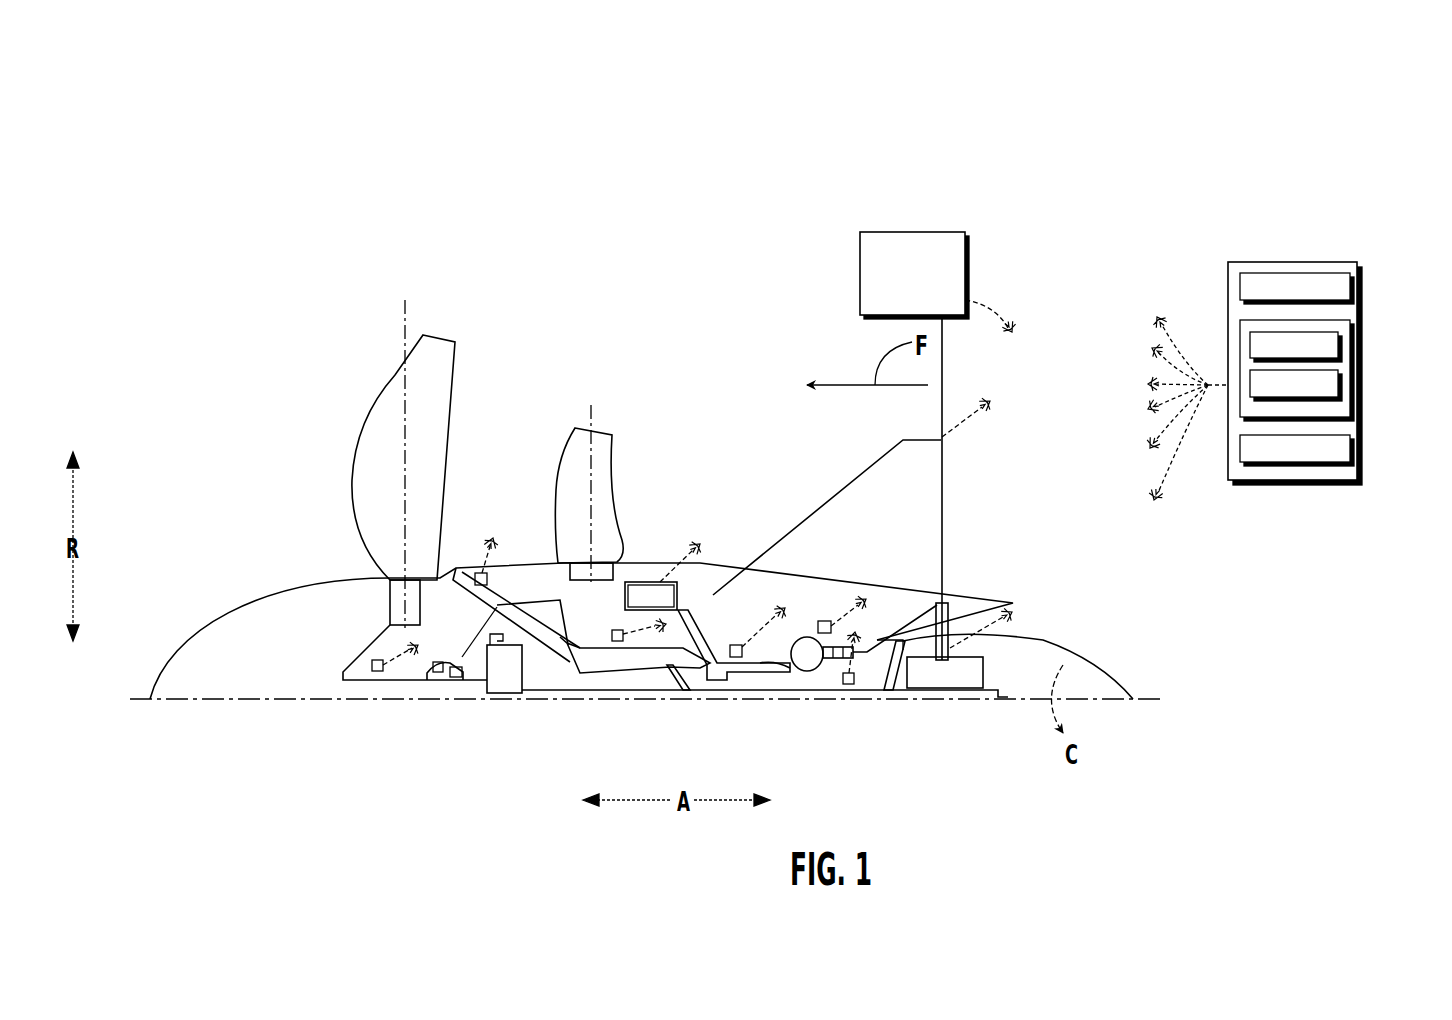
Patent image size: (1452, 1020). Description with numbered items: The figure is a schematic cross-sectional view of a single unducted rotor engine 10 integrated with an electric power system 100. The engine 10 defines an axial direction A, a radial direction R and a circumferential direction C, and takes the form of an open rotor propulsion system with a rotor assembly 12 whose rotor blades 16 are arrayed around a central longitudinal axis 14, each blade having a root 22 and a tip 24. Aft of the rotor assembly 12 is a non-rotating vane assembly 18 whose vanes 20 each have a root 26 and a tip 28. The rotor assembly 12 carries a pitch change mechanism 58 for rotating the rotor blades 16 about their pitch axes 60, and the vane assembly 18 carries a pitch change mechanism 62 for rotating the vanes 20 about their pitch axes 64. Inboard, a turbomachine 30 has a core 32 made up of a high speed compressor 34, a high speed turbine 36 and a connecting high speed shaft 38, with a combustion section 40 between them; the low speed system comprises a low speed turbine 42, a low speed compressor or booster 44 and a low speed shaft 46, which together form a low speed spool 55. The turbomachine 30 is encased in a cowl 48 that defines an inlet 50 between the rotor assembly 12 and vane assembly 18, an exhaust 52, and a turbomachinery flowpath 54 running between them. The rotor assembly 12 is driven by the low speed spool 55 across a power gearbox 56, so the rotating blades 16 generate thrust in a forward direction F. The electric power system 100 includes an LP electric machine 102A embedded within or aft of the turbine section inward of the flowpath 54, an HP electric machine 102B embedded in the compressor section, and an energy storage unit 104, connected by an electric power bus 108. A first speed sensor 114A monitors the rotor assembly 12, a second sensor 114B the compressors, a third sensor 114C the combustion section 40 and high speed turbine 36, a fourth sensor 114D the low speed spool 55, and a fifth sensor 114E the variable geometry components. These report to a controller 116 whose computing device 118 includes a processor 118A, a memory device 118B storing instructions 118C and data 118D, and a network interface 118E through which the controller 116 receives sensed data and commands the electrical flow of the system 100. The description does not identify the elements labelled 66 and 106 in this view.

The electric power system 100 is at (788, 140).
The single unducted rotor engine 10 is at (610, 298).
The rotor assembly 12 is at (300, 490).
The central longitudinal axis 14 is at (343, 705).
The rotor blades 16 is at (352, 455).
The vane assembly 18 is at (701, 354).
The vanes 20 is at (612, 498).
The root 22 is at (377, 572).
The tip 24 is at (448, 340).
The root 26 is at (618, 565).
The tip 28 is at (603, 432).
The turbomachine 30 is at (714, 540).
The core 32 is at (823, 555).
The high speed compressor 34 is at (792, 666).
The high speed turbine 36 is at (838, 658).
The high speed shaft 38 is at (800, 670).
The combustion section 40 is at (818, 668).
The low speed turbine 42 is at (936, 608).
The low speed compressor 44 is at (617, 660).
The low speed shaft 46 is at (733, 690).
The cowl 48 is at (862, 577).
The inlet 50 is at (447, 562).
The exhaust 52 is at (1034, 625).
The turbomachinery flowpath 54 is at (548, 662).
The low speed spool 55 is at (775, 700).
The power gearbox 56 is at (505, 690).
The pitch change mechanism 58 is at (398, 603).
The pitch axes 60 is at (398, 320).
The pitch change mechanism 62 is at (560, 565).
The pitch axes 64 is at (588, 410).
The airflow direction 66 is at (797, 378).
The LP electric machine 102A is at (970, 675).
The HP electric machine 102B is at (664, 575).
The energy storage unit 104 is at (965, 252).
The strut 106 is at (700, 633).
The electric power bus 108 is at (969, 461).
The first speed sensor 114A is at (372, 660).
The second sensor 114B is at (612, 635).
The third sensor 114C is at (824, 621).
The fourth sensor 114D is at (852, 684).
The fifth sensor 114E is at (487, 578).
The controller 116 is at (1289, 334).
The computing device 118 is at (1358, 263).
The processor 118A is at (1352, 292).
The memory device 118B is at (1350, 336).
The instructions 118C is at (1340, 357).
The data 118D is at (1340, 392).
The network interface 118E is at (1352, 455).